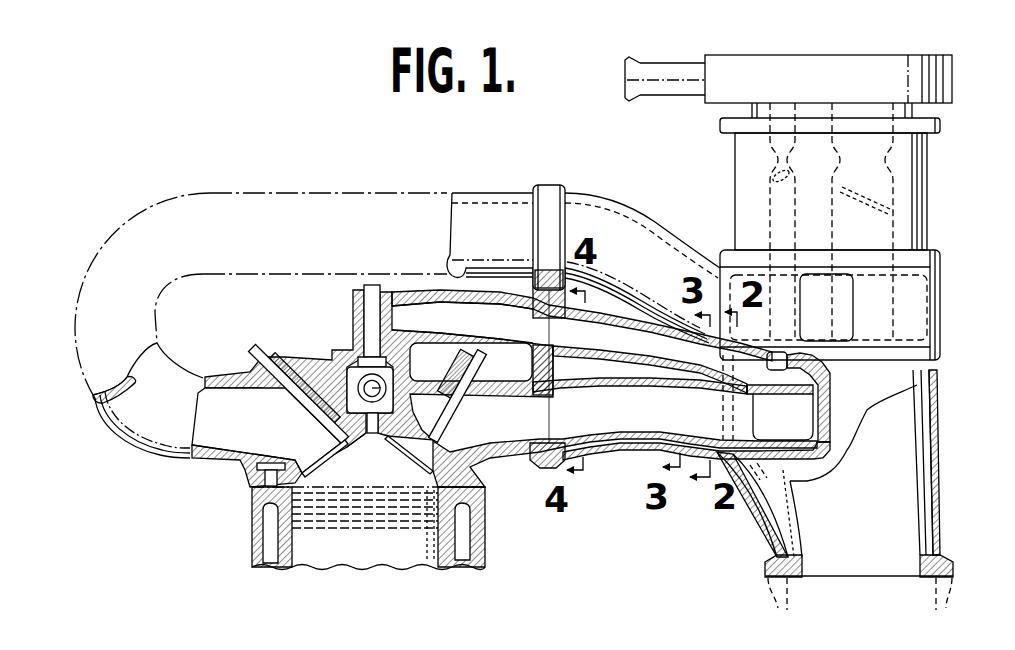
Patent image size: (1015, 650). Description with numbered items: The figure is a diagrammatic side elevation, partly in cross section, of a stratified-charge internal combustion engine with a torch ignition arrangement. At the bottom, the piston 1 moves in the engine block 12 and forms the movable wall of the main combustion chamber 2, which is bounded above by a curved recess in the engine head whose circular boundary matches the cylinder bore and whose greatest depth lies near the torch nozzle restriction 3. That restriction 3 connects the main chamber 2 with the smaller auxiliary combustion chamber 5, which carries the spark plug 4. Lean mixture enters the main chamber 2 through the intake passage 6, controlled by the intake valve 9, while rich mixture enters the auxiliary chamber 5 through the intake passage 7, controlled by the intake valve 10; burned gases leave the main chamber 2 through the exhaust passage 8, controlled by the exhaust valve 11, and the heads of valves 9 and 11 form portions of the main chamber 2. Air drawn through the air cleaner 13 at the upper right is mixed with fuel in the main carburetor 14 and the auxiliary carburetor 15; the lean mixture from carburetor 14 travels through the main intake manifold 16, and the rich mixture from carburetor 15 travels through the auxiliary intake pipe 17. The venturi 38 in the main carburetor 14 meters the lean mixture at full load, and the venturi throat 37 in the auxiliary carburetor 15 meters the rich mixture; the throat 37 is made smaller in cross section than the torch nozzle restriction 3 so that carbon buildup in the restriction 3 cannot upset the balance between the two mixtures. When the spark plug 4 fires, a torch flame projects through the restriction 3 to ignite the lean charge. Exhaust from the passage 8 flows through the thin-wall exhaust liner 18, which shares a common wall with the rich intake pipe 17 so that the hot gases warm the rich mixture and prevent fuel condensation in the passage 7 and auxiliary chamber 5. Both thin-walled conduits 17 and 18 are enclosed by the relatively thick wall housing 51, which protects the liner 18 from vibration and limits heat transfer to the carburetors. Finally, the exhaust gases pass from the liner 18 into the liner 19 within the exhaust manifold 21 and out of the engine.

The piston 1 is at (347, 553).
The main combustion chamber 2 is at (363, 454).
The torch nozzle restriction 3 is at (373, 433).
The spark plug 4 is at (338, 367).
The auxiliary combustion chamber 5 is at (362, 383).
The intake passage 6 is at (455, 258).
The intake passage 7 is at (443, 313).
The exhaust passage 8 is at (524, 443).
The intake valve 9 is at (310, 445).
The intake valve 10 is at (405, 312).
The exhaust valve 11 is at (433, 440).
The engine block 12 is at (482, 525).
The air cleaner 13 is at (840, 62).
The main carburetor 14 is at (895, 211).
The auxiliary carburetor 15 is at (768, 194).
The main intake manifold 16 is at (590, 203).
The auxiliary intake pipe 17 is at (615, 318).
The exhaust liner 18 is at (612, 441).
The liner 19 is at (925, 480).
The exhaust manifold 21 is at (937, 510).
The venturi throat 37 is at (775, 152).
The venturi 38 is at (920, 168).
The thick wall housing 51 is at (597, 440).